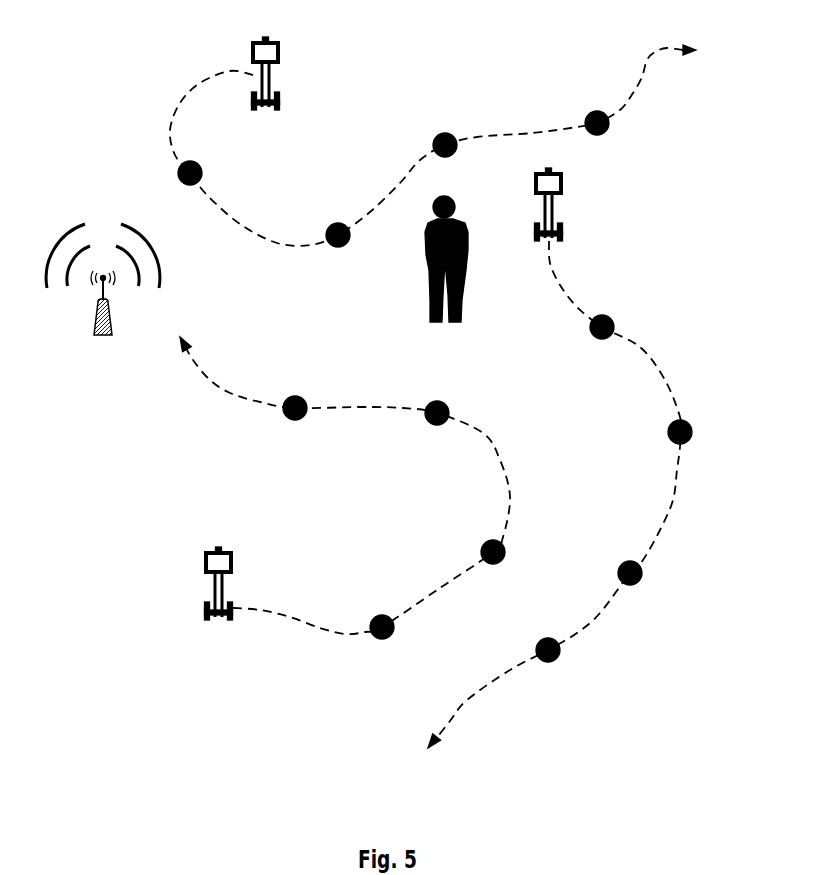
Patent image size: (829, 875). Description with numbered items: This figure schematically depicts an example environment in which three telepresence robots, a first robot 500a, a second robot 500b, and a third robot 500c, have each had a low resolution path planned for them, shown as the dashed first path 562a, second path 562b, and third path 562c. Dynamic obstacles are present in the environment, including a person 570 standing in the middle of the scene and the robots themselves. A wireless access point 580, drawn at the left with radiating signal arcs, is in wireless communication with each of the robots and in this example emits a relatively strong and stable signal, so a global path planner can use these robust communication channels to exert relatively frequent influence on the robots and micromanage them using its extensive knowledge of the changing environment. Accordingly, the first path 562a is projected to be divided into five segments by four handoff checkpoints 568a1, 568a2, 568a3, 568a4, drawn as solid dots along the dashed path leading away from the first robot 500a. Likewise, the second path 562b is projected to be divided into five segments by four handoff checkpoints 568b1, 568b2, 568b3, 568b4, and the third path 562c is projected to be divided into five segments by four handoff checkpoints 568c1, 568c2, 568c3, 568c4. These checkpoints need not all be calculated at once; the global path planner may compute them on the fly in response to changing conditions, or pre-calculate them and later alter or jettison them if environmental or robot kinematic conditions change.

The first robot 500a is at (293, 71).
The second robot 500b is at (252, 576).
The third robot 500c is at (583, 197).
The first path 562a is at (640, 80).
The second path 562b is at (505, 525).
The third path 562c is at (672, 498).
The handoff checkpoint 568a1 is at (202, 172).
The handoff checkpoint 568a2 is at (328, 230).
The handoff checkpoint 568a3 is at (453, 135).
The handoff checkpoint 568a4 is at (585, 120).
The handoff checkpoint 568b1 is at (382, 639).
The handoff checkpoint 568b2 is at (503, 557).
The handoff checkpoint 568b3 is at (449, 412).
The handoff checkpoint 568b4 is at (307, 407).
The handoff checkpoint 568c1 is at (614, 327).
The handoff checkpoint 568c2 is at (668, 437).
The handoff checkpoint 568c3 is at (642, 570).
The handoff checkpoint 568c4 is at (538, 655).
The person 570 is at (462, 262).
The wireless access point 580 is at (113, 332).